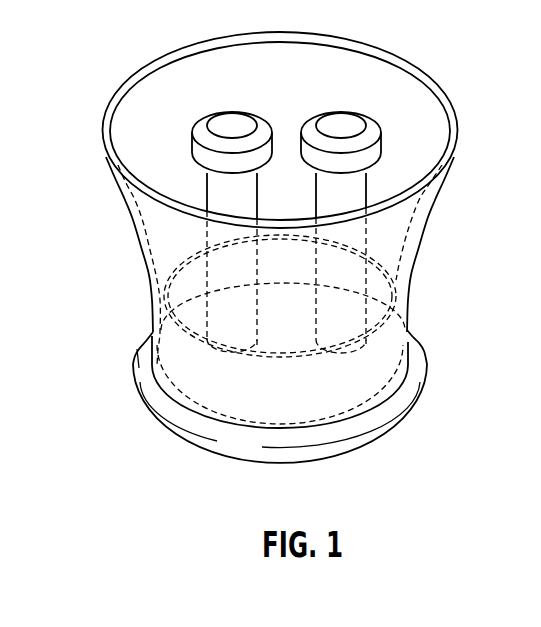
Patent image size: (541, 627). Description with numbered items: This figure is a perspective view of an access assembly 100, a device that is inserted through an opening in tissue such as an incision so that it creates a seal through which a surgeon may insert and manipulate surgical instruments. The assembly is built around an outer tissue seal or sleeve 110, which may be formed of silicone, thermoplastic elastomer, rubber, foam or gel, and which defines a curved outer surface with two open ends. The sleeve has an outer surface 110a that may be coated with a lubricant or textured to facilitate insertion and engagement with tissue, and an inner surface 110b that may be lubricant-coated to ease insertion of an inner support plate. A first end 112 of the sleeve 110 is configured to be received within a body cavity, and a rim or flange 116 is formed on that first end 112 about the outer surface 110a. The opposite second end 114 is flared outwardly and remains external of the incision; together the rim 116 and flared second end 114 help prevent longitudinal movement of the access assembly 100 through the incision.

The access assembly 100 is at (451, 56).
The outer tissue seal or sleeve 110 is at (139, 298).
The outer surface 110a is at (412, 305).
The inner surface 110b is at (147, 236).
The first end 112 is at (425, 343).
The second end 114 is at (432, 213).
The rim or flange 116 is at (421, 381).